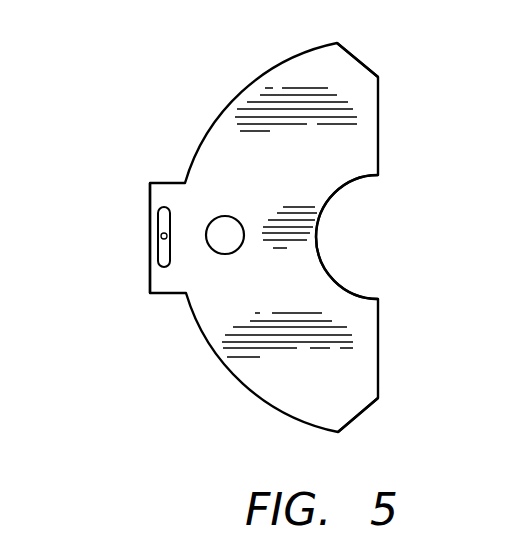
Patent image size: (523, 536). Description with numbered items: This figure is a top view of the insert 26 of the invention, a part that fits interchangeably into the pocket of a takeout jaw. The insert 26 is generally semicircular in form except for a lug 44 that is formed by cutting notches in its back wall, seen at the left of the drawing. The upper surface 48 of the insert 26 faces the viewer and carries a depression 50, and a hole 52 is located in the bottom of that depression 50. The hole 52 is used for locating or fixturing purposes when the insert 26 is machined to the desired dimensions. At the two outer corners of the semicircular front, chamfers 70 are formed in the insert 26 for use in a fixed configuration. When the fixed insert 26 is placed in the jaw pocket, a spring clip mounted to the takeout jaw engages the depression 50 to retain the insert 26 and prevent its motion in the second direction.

The insert 26 is at (161, 81).
The chamfers 70 is at (360, 60).
The upper surface 48 is at (360, 148).
The lug 44 is at (148, 240).
The depression 50 is at (160, 212).
The hole 52 is at (164, 240).